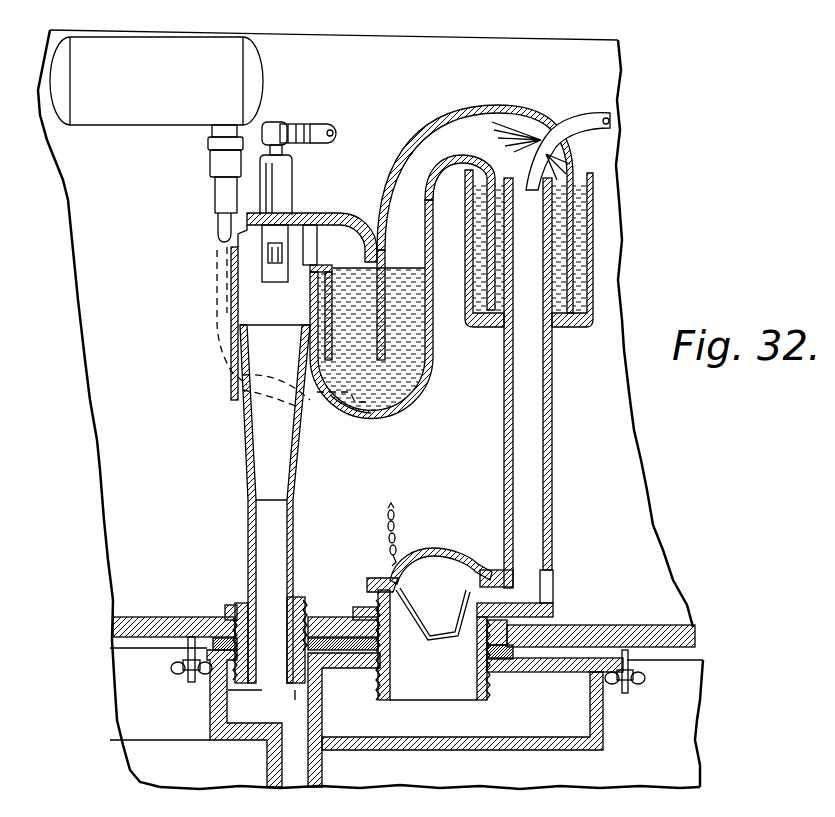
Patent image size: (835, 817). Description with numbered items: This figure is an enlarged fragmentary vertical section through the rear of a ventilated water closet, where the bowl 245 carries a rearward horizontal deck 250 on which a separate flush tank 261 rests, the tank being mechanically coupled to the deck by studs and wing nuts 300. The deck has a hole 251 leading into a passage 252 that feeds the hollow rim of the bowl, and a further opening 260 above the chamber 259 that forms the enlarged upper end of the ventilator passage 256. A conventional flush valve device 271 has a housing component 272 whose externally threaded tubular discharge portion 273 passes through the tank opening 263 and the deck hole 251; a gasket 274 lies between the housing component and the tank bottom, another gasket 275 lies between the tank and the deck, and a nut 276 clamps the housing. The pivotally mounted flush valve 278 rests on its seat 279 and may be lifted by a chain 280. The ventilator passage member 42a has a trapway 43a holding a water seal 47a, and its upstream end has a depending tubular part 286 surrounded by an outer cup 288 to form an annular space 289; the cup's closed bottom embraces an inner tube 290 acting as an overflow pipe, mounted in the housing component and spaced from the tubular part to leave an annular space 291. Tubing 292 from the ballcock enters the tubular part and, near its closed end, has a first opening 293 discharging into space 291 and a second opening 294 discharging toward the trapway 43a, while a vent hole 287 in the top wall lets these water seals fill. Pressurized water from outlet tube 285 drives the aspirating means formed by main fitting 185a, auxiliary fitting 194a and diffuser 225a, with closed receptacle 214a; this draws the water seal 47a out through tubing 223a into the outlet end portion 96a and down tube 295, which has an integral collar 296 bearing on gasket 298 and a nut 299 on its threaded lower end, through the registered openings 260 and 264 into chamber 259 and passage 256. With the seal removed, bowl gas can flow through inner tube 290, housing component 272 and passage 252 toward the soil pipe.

The closed receptacle 214a is at (123, 42).
The auxiliary fitting 194a is at (213, 181).
The tubing 223a is at (216, 236).
The diffuser 225a is at (255, 273).
The main fitting 185a is at (297, 177).
The outlet tube 285 is at (322, 124).
The outlet end portion 96a is at (232, 387).
The tube 295 is at (242, 460).
The flush tank 261 is at (88, 392).
The trapway 43a is at (413, 248).
The ventilator passage member 42a is at (440, 368).
The water seal 47a is at (403, 402).
The vent hole 287 is at (490, 108).
The second opening 294 is at (541, 142).
The tubing 292 is at (594, 113).
The first opening 293 is at (560, 152).
The annular space 289 is at (580, 174).
The depending tubular part 286 is at (574, 245).
The outer cup 288 is at (592, 273).
The annular space 291 is at (562, 289).
The inner tube 290 is at (548, 452).
The seat 279 is at (490, 567).
The housing component 272 is at (553, 585).
The flush valve device 271 is at (437, 545).
The flush valve 278 is at (410, 553).
The chain 280 is at (385, 520).
The gasket 274 is at (364, 592).
The opening 263 is at (333, 617).
The tubular discharge portion 273 is at (380, 690).
The gasket 275 is at (377, 675).
The nut 276 is at (488, 672).
The opening 264 is at (196, 618).
The deck 250 is at (573, 660).
The hole 251 is at (506, 672).
The studs and wing nuts 300 is at (170, 677).
The gasket 298 is at (228, 616).
The annular collar 296 is at (243, 598).
The opening 260 is at (230, 683).
The nut 299 is at (300, 677).
The chamber 259 is at (244, 723).
The ventilator passage 256 is at (297, 770).
The passage 252 is at (458, 723).
The bowl portion 245 is at (130, 775).